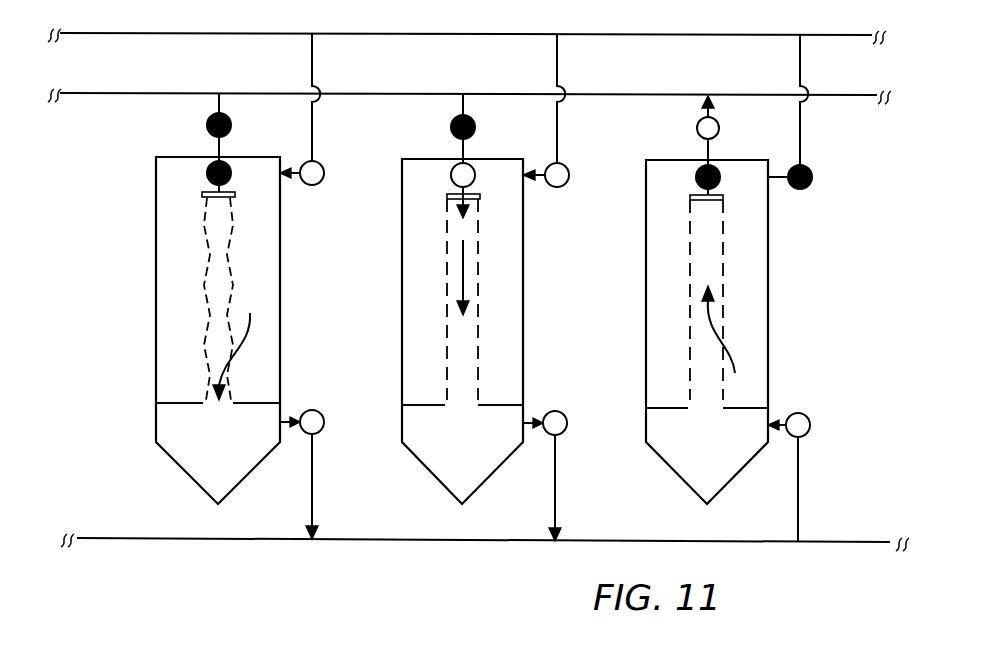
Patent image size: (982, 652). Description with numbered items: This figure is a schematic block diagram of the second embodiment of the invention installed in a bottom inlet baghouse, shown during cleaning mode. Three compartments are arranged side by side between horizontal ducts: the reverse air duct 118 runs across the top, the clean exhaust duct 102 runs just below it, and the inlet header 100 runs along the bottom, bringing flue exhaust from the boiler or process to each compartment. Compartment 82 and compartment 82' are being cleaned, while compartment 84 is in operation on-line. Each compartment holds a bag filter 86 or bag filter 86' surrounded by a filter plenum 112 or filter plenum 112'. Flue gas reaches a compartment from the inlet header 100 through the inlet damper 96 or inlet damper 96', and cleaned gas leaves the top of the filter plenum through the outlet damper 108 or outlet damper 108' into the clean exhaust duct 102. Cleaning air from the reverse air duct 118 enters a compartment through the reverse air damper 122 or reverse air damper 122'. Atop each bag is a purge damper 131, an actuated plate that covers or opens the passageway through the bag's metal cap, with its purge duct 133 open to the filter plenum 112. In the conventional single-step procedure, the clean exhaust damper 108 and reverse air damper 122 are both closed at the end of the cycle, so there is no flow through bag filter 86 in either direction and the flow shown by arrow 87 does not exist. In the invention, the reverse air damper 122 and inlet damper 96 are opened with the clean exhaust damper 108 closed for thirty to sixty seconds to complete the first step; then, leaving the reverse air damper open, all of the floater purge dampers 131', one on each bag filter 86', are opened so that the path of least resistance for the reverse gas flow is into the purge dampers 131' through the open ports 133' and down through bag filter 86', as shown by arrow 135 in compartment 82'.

The reverse air duct 118 is at (346, 33).
The clean exhaust duct 102 is at (368, 76).
The inlet header 100 is at (345, 538).
The compartment 82 is at (174, 330).
The compartment 82' is at (434, 331).
The compartment 84 is at (646, 316).
The filter plenum 112 is at (151, 296).
The filter plenum 112' is at (405, 297).
The bag filter 86 is at (531, 325).
The bag filter 86' is at (530, 293).
The arrow 87 is at (247, 340).
The outlet damper 108 is at (182, 127).
The outlet damper 108' is at (416, 129).
The purge damper 131 is at (396, 178).
The floater purge damper 131' is at (401, 189).
The purge duct 133 is at (522, 158).
The open port 133' is at (504, 152).
The arrow 135 is at (463, 265).
The reverse air damper 122 is at (331, 156).
The reverse air damper 122' is at (572, 157).
The inlet damper 96 is at (322, 461).
The inlet damper 96' is at (563, 463).